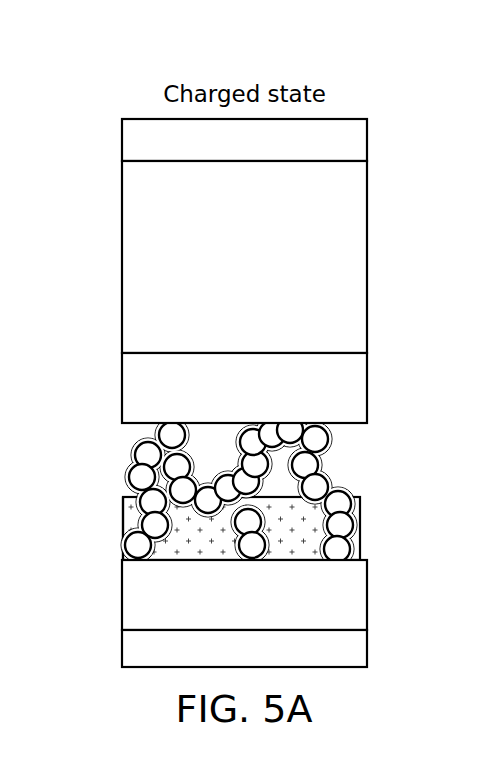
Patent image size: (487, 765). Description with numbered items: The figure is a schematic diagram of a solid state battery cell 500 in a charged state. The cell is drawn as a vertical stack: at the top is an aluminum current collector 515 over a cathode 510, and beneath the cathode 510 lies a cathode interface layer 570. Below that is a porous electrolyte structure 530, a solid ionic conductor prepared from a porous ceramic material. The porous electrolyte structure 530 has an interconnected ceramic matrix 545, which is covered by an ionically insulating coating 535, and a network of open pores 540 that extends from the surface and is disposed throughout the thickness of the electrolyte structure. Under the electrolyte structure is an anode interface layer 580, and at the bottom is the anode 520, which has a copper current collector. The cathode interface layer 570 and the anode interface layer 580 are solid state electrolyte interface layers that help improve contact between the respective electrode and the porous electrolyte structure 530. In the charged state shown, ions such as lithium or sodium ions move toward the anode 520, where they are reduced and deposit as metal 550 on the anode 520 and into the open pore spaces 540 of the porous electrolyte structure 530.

The battery cell 500 is at (165, 58).
The aluminum current collector 515 is at (367, 137).
The cathode 510 is at (367, 246).
The cathode interface layer 570 is at (367, 380).
The porous electrolyte structure 530 is at (120, 440).
The open pores 540 is at (280, 488).
The ceramic matrix 545 is at (334, 491).
The ionically insulating coating 535 is at (360, 521).
The metal 550 is at (122, 515).
The anode interface layer 580 is at (367, 585).
The anode 520 is at (367, 648).